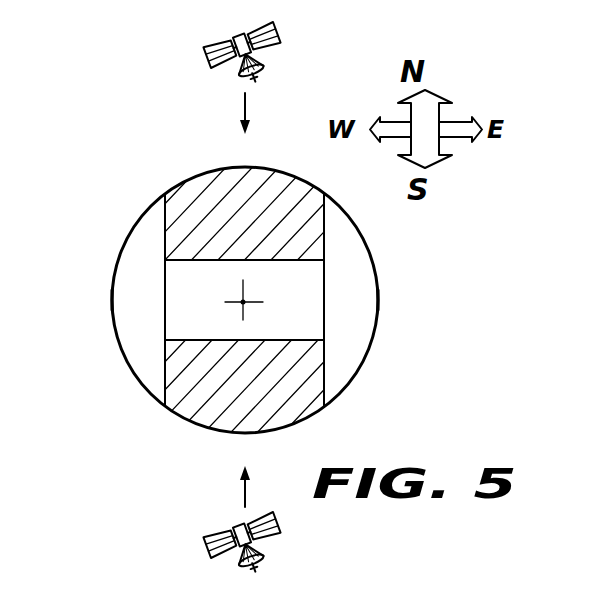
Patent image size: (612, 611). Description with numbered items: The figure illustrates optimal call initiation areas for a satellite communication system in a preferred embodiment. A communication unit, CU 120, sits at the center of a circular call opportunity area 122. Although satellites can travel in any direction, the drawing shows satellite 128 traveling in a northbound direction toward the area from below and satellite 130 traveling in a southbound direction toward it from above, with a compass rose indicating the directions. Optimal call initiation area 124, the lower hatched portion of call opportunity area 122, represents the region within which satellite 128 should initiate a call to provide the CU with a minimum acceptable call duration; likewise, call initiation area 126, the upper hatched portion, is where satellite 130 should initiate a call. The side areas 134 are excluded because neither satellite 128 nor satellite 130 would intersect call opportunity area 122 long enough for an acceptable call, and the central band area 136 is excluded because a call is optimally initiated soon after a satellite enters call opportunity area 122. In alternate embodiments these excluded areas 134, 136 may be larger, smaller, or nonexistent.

The CU 120 is at (247, 298).
The call opportunity area 122 is at (307, 420).
The optimal call initiation area 124 is at (196, 419).
The call initiation area 126 is at (209, 173).
The satellite 128 is at (202, 537).
The satellite 130 is at (202, 47).
The excluded areas 134 is at (116, 292).
The excluded area 136 is at (212, 330).